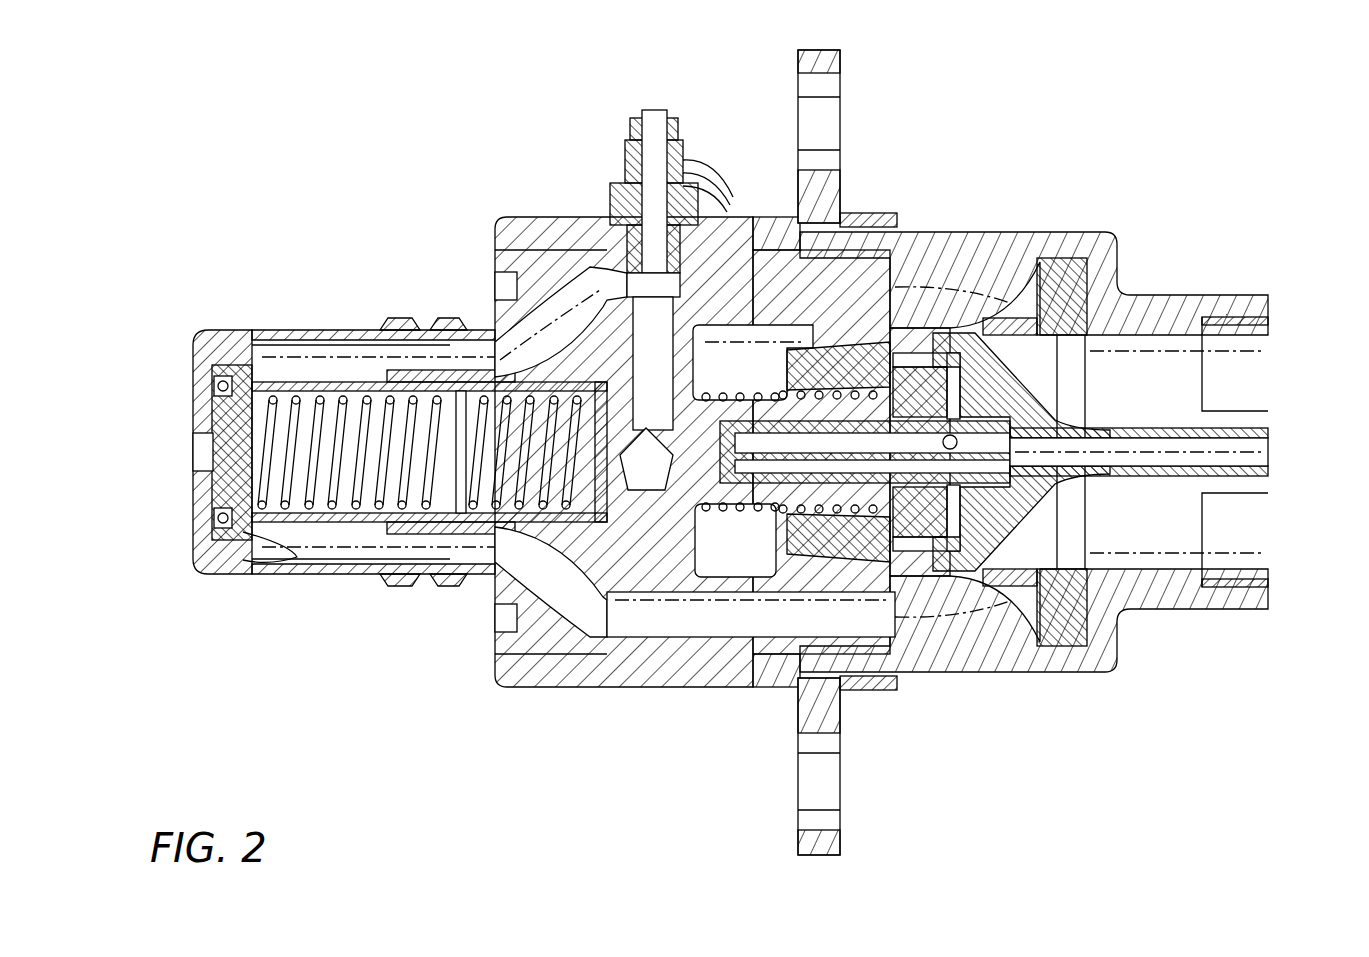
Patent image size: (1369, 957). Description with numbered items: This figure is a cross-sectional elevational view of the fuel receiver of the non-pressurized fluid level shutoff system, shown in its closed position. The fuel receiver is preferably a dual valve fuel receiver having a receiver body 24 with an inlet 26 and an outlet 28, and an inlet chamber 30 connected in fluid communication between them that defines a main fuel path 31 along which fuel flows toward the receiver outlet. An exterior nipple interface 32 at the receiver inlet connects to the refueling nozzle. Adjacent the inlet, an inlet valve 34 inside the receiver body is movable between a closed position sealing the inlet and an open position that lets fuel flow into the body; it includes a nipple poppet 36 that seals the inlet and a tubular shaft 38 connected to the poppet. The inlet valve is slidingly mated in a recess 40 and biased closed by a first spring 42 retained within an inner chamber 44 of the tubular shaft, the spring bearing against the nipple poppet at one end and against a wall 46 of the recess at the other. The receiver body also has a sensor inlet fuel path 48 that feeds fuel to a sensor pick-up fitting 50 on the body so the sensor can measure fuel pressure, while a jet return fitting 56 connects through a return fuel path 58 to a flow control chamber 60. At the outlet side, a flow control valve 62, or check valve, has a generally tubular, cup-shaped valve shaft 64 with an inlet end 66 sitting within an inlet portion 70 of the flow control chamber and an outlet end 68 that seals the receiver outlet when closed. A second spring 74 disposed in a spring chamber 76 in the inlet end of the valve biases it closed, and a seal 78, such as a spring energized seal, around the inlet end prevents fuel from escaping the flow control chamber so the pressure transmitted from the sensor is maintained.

The receiver body 24 is at (1023, 233).
The inlet 26 is at (200, 374).
The outlet 28 is at (1265, 362).
The inlet chamber 30 is at (338, 547).
The main fuel path 31 is at (672, 648).
The exterior nipple interface 32 is at (200, 331).
The inlet valve 34 is at (294, 348).
The nipple poppet 36 is at (290, 548).
The tubular shaft 38 is at (347, 360).
The recess 40 is at (497, 560).
The first spring 42 is at (343, 467).
The inner chamber 44 is at (470, 385).
The wall 46 is at (490, 398).
The sensor inlet fuel path 48 is at (560, 298).
The sensor pick-up fitting 50 is at (722, 175).
The jet return fitting 56 is at (628, 140).
The return fuel path 58 is at (647, 417).
The flow control chamber 60 is at (745, 555).
The flow control valve 62 is at (962, 315).
The valve shaft 64 is at (945, 575).
The inlet end 66 is at (837, 575).
The outlet end 68 is at (1020, 575).
The inlet portion 70 is at (740, 352).
The second spring 74 is at (865, 520).
The spring chamber 76 is at (857, 410).
The seal 78 is at (835, 575).